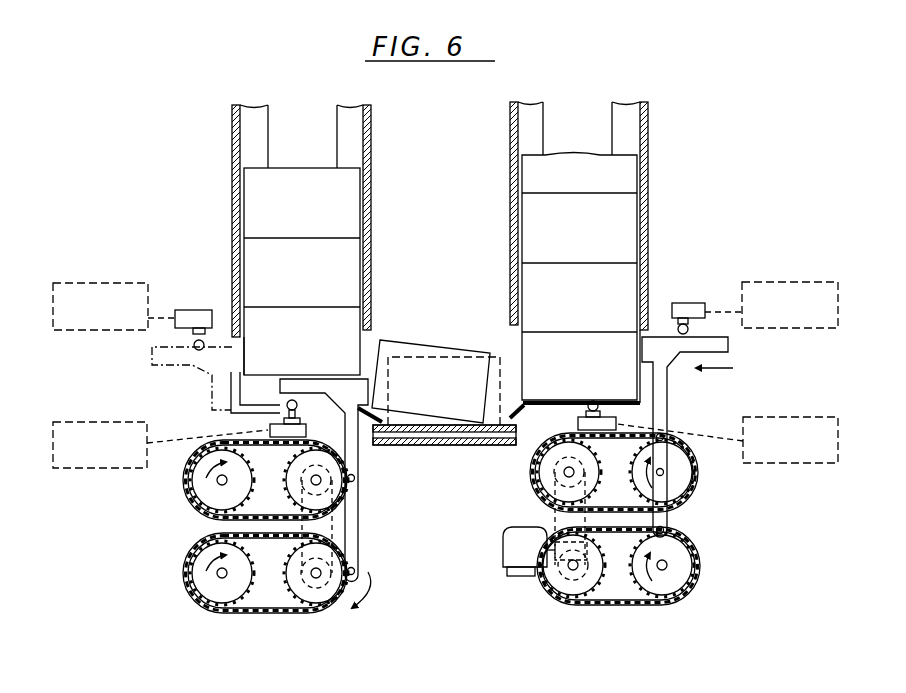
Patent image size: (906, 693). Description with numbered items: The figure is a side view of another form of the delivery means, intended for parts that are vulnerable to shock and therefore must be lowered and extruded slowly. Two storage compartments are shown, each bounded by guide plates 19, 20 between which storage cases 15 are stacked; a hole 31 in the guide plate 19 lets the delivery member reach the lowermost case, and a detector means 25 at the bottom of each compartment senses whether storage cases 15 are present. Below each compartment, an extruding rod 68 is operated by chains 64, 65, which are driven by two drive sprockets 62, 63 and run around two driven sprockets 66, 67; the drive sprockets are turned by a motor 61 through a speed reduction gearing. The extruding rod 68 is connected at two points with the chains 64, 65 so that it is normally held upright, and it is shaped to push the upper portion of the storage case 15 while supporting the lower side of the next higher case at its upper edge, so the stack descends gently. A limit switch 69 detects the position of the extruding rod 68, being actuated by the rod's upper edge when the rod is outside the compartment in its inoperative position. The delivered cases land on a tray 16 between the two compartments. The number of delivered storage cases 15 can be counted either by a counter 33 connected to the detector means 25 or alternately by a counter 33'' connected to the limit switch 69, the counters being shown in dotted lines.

The storage case 15 is at (302, 171).
The receiving tray 16 is at (432, 445).
The guide plate 19 is at (232, 130).
The guide plate 20 is at (371, 130).
The detector means 25 is at (270, 430).
The hole 31 is at (242, 336).
The counter 33 is at (445, 429).
The counter 33'' is at (445, 290).
The motor 61 is at (522, 527).
The drive sprocket 62 is at (332, 597).
The drive sprocket 63 is at (349, 500).
The chain 64 is at (270, 614).
The chain 65 is at (201, 448).
The driven sprocket 66 is at (205, 590).
The driven sprocket 67 is at (200, 500).
The extruding rod 68 is at (360, 470).
The limit switch 69 is at (190, 310).